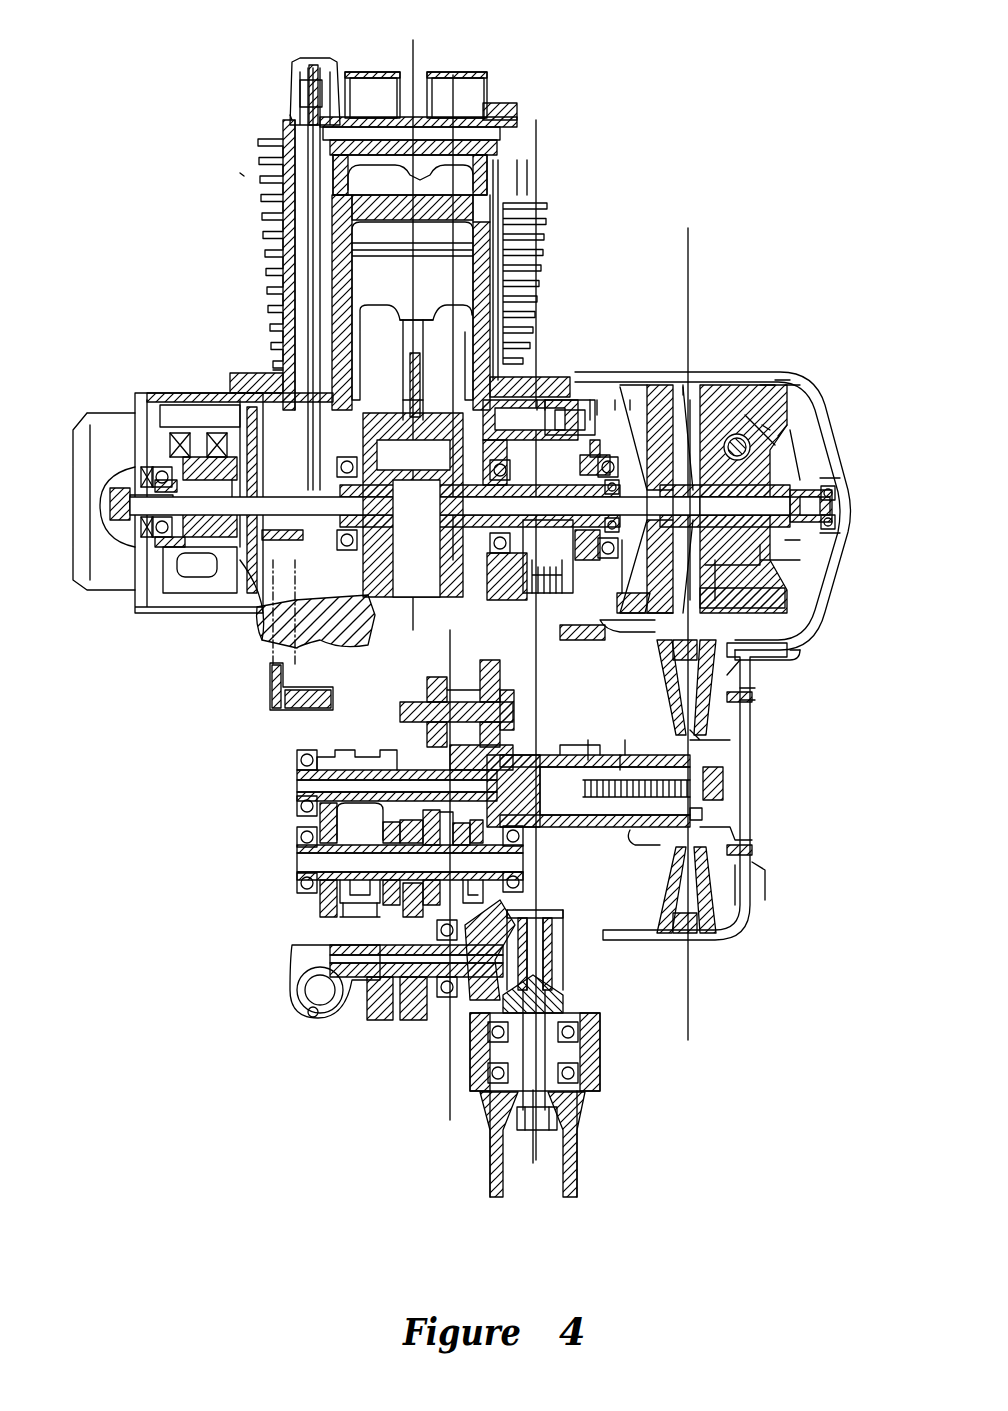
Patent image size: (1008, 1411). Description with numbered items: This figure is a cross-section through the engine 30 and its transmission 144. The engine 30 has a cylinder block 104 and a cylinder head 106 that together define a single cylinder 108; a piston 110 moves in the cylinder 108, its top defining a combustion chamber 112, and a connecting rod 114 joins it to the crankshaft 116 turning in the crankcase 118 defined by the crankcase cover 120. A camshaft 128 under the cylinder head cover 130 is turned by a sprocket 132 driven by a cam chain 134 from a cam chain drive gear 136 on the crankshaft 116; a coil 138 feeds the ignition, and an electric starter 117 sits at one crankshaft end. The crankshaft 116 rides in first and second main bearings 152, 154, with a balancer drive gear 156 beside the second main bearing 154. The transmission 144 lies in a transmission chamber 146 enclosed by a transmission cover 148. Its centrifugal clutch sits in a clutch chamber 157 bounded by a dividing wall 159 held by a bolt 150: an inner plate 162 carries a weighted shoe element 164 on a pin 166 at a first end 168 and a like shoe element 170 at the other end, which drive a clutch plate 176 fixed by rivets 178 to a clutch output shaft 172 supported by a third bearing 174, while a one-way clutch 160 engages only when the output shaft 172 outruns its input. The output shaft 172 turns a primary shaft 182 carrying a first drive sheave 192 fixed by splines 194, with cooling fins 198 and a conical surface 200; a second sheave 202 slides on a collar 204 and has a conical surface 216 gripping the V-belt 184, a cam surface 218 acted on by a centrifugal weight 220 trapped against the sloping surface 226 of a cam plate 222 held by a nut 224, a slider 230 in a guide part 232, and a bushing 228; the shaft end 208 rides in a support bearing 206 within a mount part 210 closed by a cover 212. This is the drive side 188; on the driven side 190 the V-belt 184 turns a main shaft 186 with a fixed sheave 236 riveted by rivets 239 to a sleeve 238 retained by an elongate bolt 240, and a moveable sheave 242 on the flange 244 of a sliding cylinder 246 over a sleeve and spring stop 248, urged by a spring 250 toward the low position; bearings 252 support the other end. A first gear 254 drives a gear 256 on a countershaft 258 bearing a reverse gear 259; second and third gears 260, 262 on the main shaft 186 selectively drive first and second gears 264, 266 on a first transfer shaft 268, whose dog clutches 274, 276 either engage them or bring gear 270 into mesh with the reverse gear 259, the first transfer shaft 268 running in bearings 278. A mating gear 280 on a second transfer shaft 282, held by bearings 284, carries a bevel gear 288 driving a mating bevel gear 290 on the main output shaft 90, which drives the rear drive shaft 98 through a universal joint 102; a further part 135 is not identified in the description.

The engine 30 is at (228, 178).
The main output shaft 90 is at (540, 900).
The rear drive shaft 98 is at (570, 1120).
The universal joint 102 is at (493, 1140).
The cylinder block 104 is at (530, 260).
The cylinder head 106 is at (507, 177).
The cylinder 108 is at (278, 120).
The piston 110 is at (362, 282).
The combustion chamber 112 is at (520, 190).
The connecting rod 114 is at (400, 327).
The crankshaft 116 is at (415, 597).
The electric starter 117 is at (100, 580).
The crankcase 118 is at (275, 362).
The crankcase cover 120 is at (540, 400).
The camshaft 128 is at (410, 62).
The cylinder head cover 130 is at (490, 80).
The sprocket 132 is at (292, 90).
The cam chain 134 is at (282, 232).
The bearing 135 is at (590, 740).
The cam chain drive gear 136 is at (248, 615).
The coil 138 is at (192, 616).
The transmission 144 is at (817, 387).
The transmission chamber 146 is at (770, 644).
The transmission cover 148 is at (740, 370).
The bolt 150 is at (575, 645).
The first main bearing 152 is at (373, 560).
The second main bearing 154 is at (485, 440).
The balancer drive gear 156 is at (470, 460).
The clutch chamber 157 is at (625, 740).
The dividing wall 159 is at (615, 400).
The one-way clutch 160 is at (597, 400).
The inner plate 162 is at (588, 372).
The weighted shoe element 164 is at (545, 400).
The pin 166 is at (536, 400).
The first end 168 is at (470, 415).
The shoe element 170 is at (505, 600).
The clutch output shaft 172 is at (640, 612).
The third bearing 174 is at (630, 400).
The clutch plate 176 is at (586, 609).
The rivets 178 is at (622, 600).
The primary shaft 182 is at (750, 688).
The V-belt 184 is at (690, 390).
The main shaft 186 is at (620, 760).
The drive side 188 is at (790, 378).
The driven side 190 is at (626, 960).
The first drive sheave 192 is at (703, 375).
The splines 194 is at (745, 700).
The fins 198 is at (667, 380).
The conical surface 200 is at (723, 370).
The second sheave 202 is at (757, 373).
The collar 204 is at (835, 514).
The support bearing 206 is at (835, 525).
The end of primary shaft 208 is at (838, 496).
The mount part 210 is at (838, 484).
The cover 212 is at (822, 536).
The conical surface 216 is at (740, 678).
The cam surface 218 is at (777, 367).
The centrifugal weight 220 is at (822, 455).
The cam plate 222 is at (765, 458).
The nut 224 is at (800, 548).
The sloping surface 226 is at (762, 432).
The bushing 228 is at (785, 585).
The slider 230 is at (770, 600).
The guide part 232 is at (790, 652).
The fixed sheave 236 is at (745, 925).
The sleeve 238 is at (700, 765).
The rivets 239 is at (745, 870).
The elongate bolt 240 is at (740, 800).
The moveable sheave 242 is at (675, 912).
The flange 244 is at (720, 830).
The sliding cylinder 246 is at (640, 838).
The spring stop 248 is at (587, 760).
The spring 250 is at (700, 740).
The bearings 252 is at (300, 758).
The first gear 254 is at (460, 790).
The gear 256 is at (470, 665).
The countershaft 258 is at (410, 710).
The reverse gear 259 is at (420, 675).
The second gear 260 is at (285, 712).
The third gear 262 is at (385, 770).
The first gear 264 is at (313, 898).
The second gear 266 is at (313, 932).
The first transfer shaft 268 is at (310, 853).
The gear 270 is at (320, 780).
The dog clutch 274 is at (302, 820).
The dog clutch 276 is at (523, 882).
The bearings 278 is at (315, 882).
The mating gear 280 is at (405, 1020).
The second transfer shaft 282 is at (380, 1020).
The bearings 284 is at (445, 1000).
The bevel gear 288 is at (560, 935).
The mating bevel gear 290 is at (585, 1030).